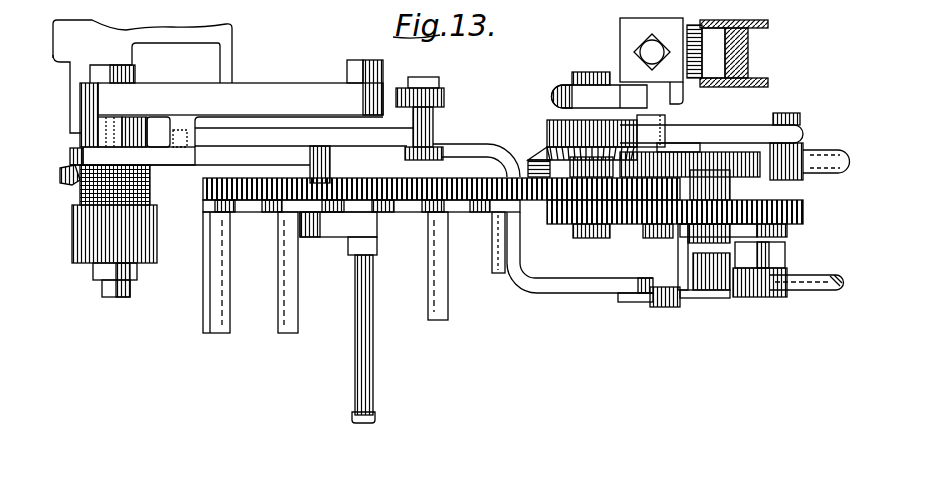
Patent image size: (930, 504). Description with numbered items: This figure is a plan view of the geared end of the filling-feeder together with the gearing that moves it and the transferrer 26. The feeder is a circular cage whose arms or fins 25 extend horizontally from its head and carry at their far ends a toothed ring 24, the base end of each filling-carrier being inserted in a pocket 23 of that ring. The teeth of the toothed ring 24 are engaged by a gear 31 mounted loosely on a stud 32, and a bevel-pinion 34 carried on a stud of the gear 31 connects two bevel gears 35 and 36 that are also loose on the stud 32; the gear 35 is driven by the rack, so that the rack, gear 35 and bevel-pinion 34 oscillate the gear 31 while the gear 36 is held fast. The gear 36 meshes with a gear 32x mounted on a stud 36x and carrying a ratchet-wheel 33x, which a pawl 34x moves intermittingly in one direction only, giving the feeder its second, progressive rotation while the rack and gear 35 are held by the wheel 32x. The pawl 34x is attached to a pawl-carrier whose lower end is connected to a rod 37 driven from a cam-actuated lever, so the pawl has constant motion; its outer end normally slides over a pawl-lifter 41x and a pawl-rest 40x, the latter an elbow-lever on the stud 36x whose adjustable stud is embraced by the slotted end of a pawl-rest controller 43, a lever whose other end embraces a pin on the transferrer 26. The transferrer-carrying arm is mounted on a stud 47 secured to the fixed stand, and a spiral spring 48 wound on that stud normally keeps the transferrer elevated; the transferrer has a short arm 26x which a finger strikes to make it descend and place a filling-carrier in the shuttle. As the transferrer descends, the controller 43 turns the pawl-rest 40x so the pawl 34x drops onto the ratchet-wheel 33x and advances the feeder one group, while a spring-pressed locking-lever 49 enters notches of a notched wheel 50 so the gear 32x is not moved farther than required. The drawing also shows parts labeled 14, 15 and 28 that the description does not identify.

The bearing bracket 14 is at (742, 63).
The gear 15 is at (640, 135).
The pocket 23 is at (265, 215).
The toothed ring 24 is at (210, 193).
The arms or fins 25 is at (207, 253).
The transferrer 26 is at (213, 160).
The short arm 26x is at (78, 174).
The carriage bar 28 is at (283, 75).
The gear 31 is at (623, 180).
The stud 32 is at (580, 233).
The gear 32x is at (798, 212).
The ratchet-wheel 33x is at (643, 235).
The bevel-pinion 34 is at (542, 159).
The pawl 34x is at (683, 262).
The gear 35 is at (548, 123).
The gear 36 is at (550, 208).
The stud 36x is at (763, 257).
The rod 37 is at (805, 277).
The pawl-rest 40x is at (665, 302).
The pawl-lifter 41x is at (710, 312).
The pawl-rest controller 43 is at (570, 287).
The stud 47 is at (103, 288).
The spiral spring 48 is at (80, 198).
The locking-lever 49 is at (820, 157).
The notched wheel 50 is at (705, 160).